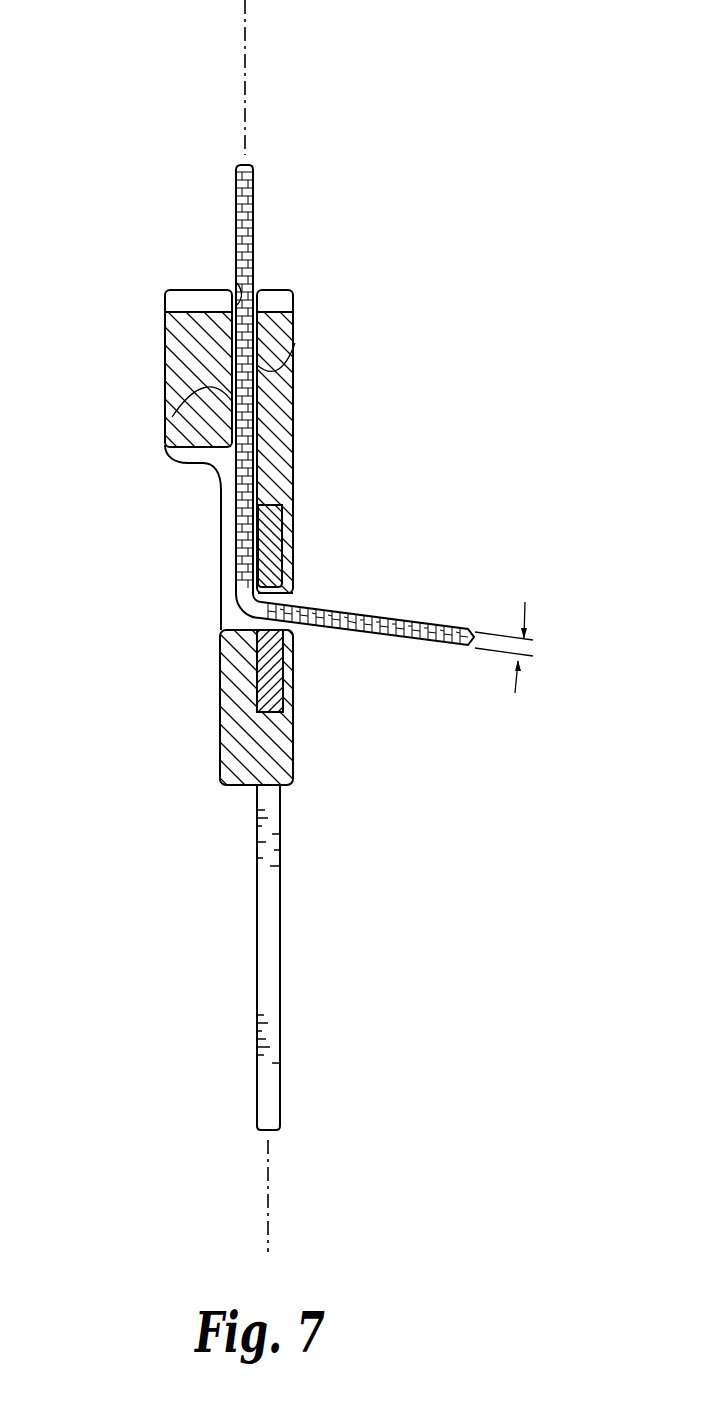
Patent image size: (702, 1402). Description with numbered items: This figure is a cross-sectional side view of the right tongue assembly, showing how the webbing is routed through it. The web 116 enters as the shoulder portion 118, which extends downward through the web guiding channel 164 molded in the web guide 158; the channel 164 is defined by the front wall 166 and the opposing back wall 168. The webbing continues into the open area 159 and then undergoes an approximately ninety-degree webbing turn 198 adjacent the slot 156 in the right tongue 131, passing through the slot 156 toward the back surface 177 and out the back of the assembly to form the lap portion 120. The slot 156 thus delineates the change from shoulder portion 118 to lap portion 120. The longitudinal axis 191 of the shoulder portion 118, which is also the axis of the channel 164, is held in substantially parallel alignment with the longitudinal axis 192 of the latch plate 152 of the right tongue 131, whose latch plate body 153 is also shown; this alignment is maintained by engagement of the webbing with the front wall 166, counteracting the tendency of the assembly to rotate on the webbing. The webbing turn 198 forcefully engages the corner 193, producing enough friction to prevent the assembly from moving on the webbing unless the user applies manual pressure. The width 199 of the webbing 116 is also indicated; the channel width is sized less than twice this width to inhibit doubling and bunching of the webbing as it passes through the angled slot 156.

The longitudinal axis of shoulder portion 191 is at (247, 28).
The longitudinal axis of latch plate 192 is at (268, 1185).
The shoulder portion 118 is at (253, 200).
The web 116 is at (255, 270).
The web guiding channel 164 is at (236, 290).
The web guide 158 is at (165, 368).
The front wall 166 is at (172, 417).
The back surface 177 is at (295, 410).
The back wall 168 is at (295, 343).
The latch plate body 153 is at (291, 527).
The corner 193 is at (279, 562).
The open area 159 is at (214, 522).
The webbing turn 198 is at (236, 617).
The lap portion 120 is at (438, 626).
The width of webbing 199 is at (527, 609).
The slot 156 is at (284, 633).
The right tongue 131 is at (280, 903).
The latch plate 152 is at (273, 990).